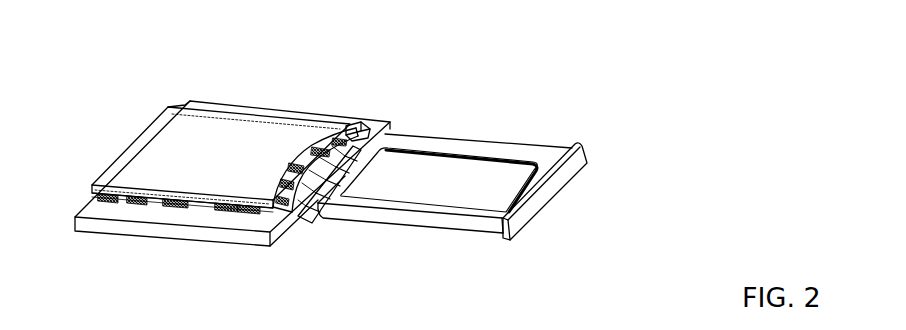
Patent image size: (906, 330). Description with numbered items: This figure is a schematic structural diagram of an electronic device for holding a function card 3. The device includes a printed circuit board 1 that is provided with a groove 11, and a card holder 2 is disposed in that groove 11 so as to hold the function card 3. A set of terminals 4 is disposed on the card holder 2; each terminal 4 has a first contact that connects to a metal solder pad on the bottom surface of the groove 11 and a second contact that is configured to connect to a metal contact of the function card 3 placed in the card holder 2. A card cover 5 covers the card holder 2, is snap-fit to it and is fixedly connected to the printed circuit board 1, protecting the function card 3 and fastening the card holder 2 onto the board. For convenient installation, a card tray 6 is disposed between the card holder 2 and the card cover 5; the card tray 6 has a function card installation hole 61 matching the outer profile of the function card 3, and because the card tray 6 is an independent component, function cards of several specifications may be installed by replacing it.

The printed circuit board 1 is at (89, 226).
The card holder 2 is at (292, 183).
The function card 3 is at (451, 168).
The terminal 4 is at (317, 144).
The card cover 5 is at (160, 148).
The card tray 6 is at (543, 193).
The groove 11 is at (362, 139).
The function card installation hole 61 is at (536, 160).